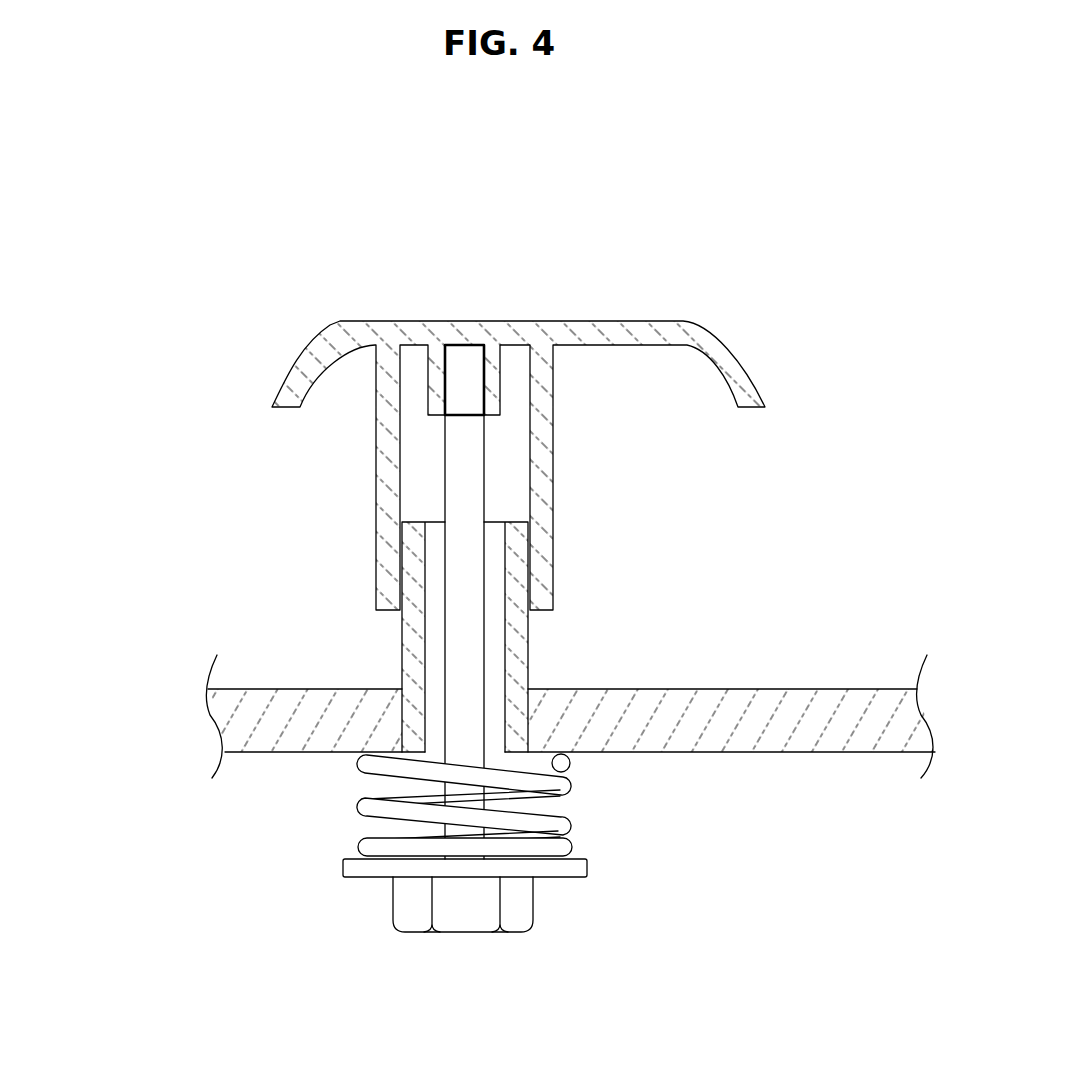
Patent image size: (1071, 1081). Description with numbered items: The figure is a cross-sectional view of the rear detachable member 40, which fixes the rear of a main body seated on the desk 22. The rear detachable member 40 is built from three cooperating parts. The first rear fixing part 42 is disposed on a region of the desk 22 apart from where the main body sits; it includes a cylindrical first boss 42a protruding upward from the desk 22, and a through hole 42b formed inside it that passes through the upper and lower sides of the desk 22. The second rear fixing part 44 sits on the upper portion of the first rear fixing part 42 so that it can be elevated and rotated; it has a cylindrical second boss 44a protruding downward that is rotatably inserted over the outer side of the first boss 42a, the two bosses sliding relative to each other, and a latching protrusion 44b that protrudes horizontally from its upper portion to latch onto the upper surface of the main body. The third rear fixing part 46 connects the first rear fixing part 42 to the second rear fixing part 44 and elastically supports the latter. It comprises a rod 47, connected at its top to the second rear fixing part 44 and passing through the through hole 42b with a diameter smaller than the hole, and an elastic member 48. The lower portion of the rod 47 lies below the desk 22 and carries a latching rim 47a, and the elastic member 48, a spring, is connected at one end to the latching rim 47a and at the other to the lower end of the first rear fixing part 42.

The desk 22 is at (856, 705).
The rear detachable member 40 is at (125, 383).
The first rear fixing part 42 is at (422, 637).
The first boss 42a is at (522, 567).
The through hole 42b is at (497, 632).
The second rear fixing part 44 is at (511, 444).
The second boss 44a is at (548, 470).
The latching protrusion 44b is at (717, 342).
The third rear fixing part 46 is at (342, 808).
The rod 47 is at (452, 565).
The latching rim 47a is at (472, 915).
The elastic member 48 is at (574, 827).